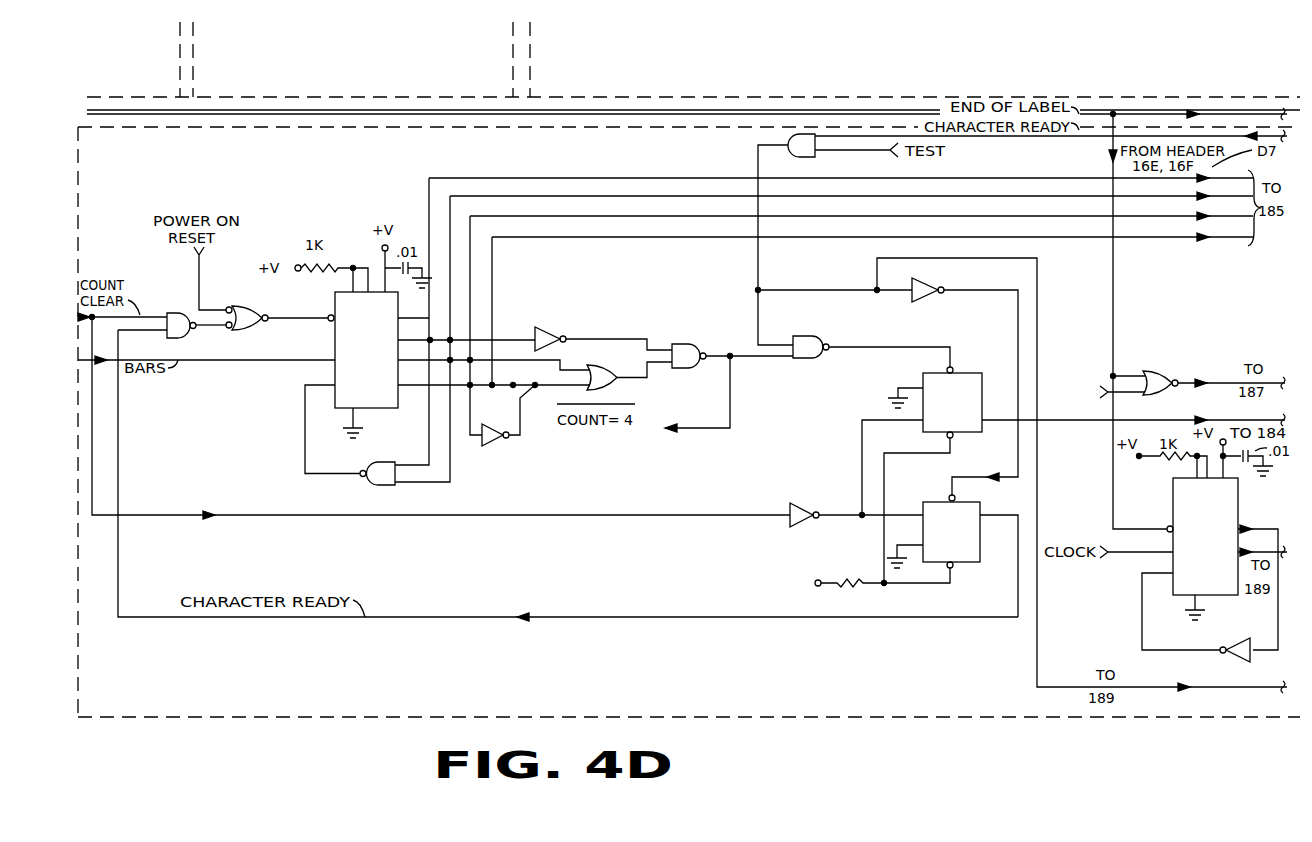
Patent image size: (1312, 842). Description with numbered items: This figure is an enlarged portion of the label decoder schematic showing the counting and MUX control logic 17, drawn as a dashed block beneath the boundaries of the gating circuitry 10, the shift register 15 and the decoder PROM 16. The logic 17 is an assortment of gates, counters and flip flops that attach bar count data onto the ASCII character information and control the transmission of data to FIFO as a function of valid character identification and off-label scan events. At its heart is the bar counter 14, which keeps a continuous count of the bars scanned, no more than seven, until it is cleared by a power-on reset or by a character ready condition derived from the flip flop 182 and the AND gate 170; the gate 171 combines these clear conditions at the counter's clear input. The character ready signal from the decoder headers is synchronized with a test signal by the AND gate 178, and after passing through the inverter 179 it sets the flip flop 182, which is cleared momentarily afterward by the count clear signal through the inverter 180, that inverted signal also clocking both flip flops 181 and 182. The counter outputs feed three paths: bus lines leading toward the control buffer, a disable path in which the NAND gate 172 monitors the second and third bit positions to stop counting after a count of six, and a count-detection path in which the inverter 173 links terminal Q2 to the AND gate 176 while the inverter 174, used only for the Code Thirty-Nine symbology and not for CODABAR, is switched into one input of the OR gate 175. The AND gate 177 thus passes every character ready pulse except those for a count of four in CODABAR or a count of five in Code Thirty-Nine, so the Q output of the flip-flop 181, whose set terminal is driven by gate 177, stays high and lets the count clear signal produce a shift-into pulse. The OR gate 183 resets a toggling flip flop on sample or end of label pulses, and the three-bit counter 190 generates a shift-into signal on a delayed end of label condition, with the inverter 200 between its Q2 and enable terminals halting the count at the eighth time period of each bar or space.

The gating circuitry 10 is at (158, 95).
The bar counter 14 is at (335, 372).
The shift register 15 is at (497, 95).
The decoder PROM 16 is at (590, 95).
The counting and MUX control logic 17 is at (120, 162).
The AND gate 170 is at (168, 310).
The gate 171 is at (238, 305).
The NAND gate 172 is at (397, 487).
The inverter 173 is at (546, 326).
The inverter 174 is at (490, 447).
The OR gate 175 is at (599, 363).
The AND gate 176 is at (692, 344).
The AND gate 177 is at (803, 360).
The AND gate 178 is at (786, 137).
The inverter 179 is at (923, 300).
The inverter 180 is at (801, 503).
The flip-flop 181 is at (973, 371).
The flip flop 182 is at (976, 564).
The OR gate 183 is at (1165, 373).
The three-bit counter 190 is at (1173, 500).
The inverter 200 is at (1236, 646).